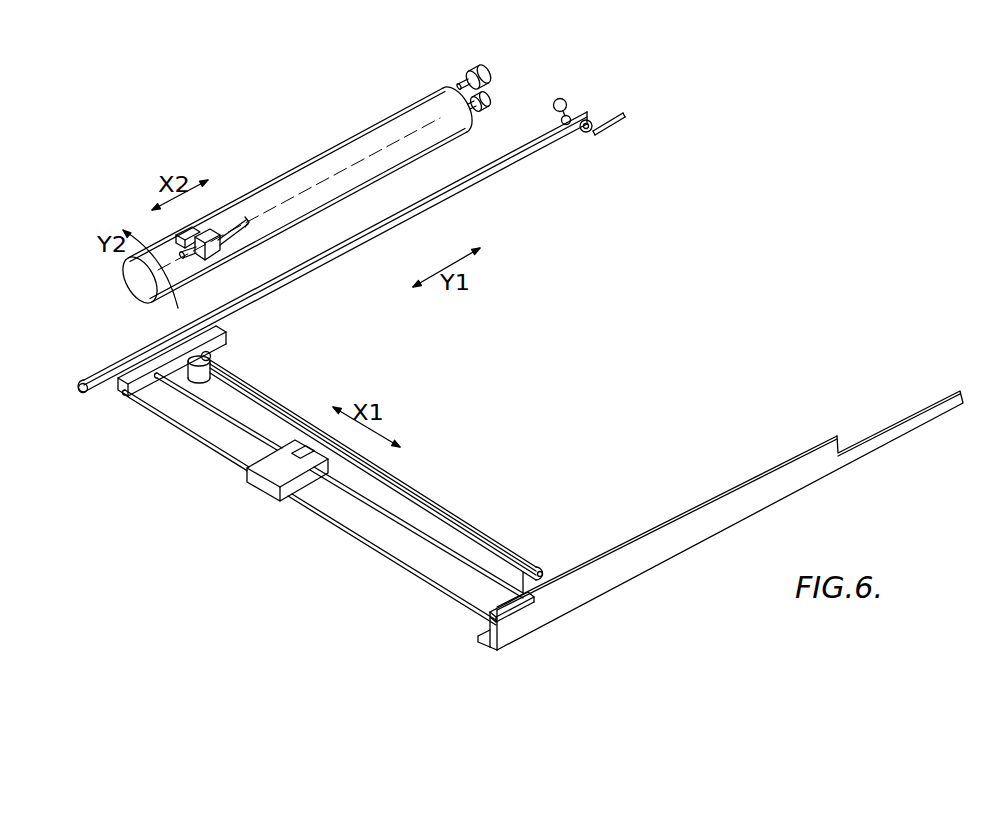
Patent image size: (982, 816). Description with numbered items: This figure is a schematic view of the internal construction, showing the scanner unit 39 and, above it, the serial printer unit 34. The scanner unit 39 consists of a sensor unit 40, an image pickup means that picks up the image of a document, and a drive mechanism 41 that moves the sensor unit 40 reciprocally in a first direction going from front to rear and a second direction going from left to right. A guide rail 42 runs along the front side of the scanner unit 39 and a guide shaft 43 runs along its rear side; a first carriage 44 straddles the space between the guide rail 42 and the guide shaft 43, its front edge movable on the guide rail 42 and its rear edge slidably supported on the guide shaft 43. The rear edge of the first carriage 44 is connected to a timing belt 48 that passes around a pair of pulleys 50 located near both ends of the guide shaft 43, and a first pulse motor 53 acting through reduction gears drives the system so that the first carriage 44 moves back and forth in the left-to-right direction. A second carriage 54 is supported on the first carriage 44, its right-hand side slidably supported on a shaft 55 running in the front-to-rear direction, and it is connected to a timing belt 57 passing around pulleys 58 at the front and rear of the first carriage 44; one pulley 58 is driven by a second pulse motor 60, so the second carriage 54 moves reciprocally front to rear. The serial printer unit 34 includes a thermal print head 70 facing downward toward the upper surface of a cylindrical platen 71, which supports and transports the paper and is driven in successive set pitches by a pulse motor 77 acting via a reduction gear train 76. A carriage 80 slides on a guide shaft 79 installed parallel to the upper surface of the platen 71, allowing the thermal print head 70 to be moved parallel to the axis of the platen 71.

The serial printer unit 34 is at (460, 75).
The pulse motor 77 is at (486, 73).
The first pulse motor 53 is at (558, 98).
The guide shaft 43 is at (617, 108).
The cylindrical platen 71 is at (331, 167).
The reduction gear train 76 is at (494, 105).
The pulleys 50 is at (589, 131).
The timing belt 48 is at (572, 136).
The thermal print head 70 is at (197, 232).
The guide shaft 79 is at (232, 232).
The carriage 80 is at (205, 258).
The pulleys 58 is at (209, 354).
The second pulse motor 60 is at (213, 359).
The sensor unit 40 is at (303, 447).
The drive mechanism 41 is at (413, 484).
The timing belt 57 is at (485, 536).
The second carriage 54 is at (278, 466).
The scanner unit 39 is at (293, 503).
The first carriage 44 is at (355, 520).
The shaft 55 is at (403, 526).
The guide rail 42 is at (700, 530).